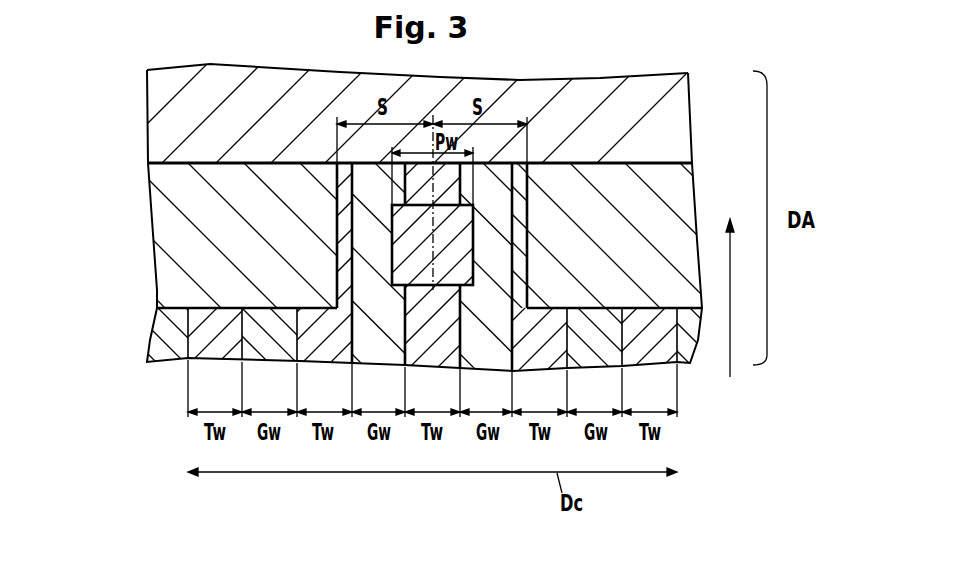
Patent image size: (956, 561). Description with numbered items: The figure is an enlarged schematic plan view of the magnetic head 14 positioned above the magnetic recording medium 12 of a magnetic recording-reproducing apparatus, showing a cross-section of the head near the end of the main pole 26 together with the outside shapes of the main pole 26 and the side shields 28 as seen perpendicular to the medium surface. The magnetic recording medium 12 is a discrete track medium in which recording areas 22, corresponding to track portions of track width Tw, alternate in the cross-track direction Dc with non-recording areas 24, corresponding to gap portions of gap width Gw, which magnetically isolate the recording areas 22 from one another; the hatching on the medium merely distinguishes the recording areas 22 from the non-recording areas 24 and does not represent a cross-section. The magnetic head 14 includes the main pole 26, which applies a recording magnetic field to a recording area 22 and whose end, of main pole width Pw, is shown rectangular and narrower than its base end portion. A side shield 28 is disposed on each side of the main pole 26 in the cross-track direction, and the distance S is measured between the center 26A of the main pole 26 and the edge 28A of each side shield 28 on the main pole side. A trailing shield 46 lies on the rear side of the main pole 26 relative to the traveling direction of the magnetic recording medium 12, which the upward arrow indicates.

The magnetic recording medium 12 is at (150, 345).
The magnetic head 14 is at (138, 185).
The recording area 22 is at (646, 379).
The non-recording area 24 is at (591, 380).
The main pole 26 is at (392, 248).
The center of the main pole 26A is at (448, 262).
The side shield 28 is at (606, 172).
The edge of the side shield 28A is at (467, 265).
The trailing shield 46 is at (684, 119).